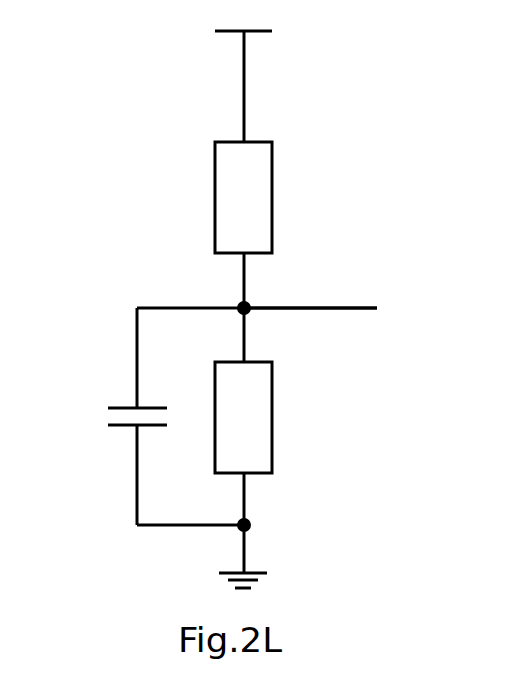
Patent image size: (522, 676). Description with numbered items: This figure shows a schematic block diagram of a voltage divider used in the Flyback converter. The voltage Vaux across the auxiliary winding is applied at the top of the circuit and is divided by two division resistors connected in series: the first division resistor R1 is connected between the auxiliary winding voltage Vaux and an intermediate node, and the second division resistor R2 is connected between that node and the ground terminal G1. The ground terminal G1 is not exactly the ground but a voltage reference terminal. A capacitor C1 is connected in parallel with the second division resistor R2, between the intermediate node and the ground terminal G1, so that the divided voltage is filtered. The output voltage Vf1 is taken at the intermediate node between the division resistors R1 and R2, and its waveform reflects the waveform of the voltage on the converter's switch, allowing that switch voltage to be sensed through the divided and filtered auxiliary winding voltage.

The voltage across the auxiliary winding Vaux is at (203, 53).
The division resistor R1 is at (286, 197).
The output voltage Vf1 is at (353, 309).
The division resistor R2 is at (288, 417).
The capacitor C1 is at (101, 419).
The ground terminal G1 is at (280, 565).